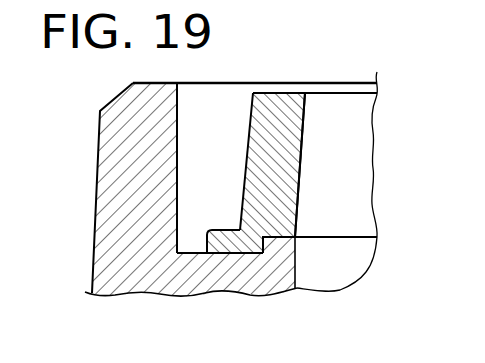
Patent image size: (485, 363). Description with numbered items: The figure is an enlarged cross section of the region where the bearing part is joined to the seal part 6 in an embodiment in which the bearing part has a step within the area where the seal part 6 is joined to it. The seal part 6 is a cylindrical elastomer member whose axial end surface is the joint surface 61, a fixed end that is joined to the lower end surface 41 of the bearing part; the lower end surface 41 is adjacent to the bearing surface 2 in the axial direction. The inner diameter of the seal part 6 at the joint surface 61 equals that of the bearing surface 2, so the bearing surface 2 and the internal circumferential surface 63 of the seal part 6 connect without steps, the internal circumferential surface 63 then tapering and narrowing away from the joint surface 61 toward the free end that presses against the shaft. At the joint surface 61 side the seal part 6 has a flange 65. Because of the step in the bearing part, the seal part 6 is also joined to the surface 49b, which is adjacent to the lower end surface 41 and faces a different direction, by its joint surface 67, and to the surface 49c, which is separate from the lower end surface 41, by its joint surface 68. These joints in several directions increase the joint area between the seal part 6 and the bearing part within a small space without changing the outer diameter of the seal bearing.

The bearing surface 2 is at (297, 284).
The seal part 6 is at (276, 110).
The lower end surface 41 is at (295, 248).
The surface 49b is at (272, 246).
The surface 49c is at (232, 255).
The joint surface 61 is at (278, 236).
The internal circumferential surface 63 is at (300, 173).
The flange 65 is at (207, 233).
The joint surface 67 is at (250, 228).
The joint surface 68 is at (223, 246).